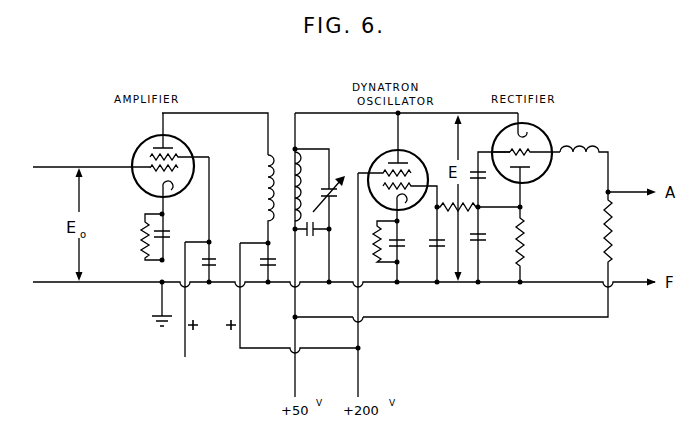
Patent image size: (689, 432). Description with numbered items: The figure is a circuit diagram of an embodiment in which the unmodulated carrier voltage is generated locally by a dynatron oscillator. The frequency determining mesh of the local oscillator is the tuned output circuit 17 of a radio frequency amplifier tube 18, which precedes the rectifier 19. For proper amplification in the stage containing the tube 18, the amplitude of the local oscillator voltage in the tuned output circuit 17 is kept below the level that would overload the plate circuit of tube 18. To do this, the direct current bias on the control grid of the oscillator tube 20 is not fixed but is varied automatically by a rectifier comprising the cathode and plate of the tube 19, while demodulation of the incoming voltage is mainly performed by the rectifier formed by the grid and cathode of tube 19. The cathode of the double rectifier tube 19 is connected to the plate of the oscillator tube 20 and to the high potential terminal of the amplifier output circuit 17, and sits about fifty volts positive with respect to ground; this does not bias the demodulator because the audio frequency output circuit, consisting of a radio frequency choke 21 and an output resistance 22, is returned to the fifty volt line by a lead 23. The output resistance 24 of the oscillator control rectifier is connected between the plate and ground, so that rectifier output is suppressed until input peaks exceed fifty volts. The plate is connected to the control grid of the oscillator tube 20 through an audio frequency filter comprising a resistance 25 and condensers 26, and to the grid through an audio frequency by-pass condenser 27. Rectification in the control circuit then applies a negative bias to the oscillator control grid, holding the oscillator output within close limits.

The tuned output circuit 17 is at (302, 215).
The radio frequency amplifier tube 18 is at (140, 144).
The rectifier 19 is at (496, 140).
The oscillator tube 20 is at (386, 158).
The radio frequency choke 21 is at (585, 151).
The output resistance 22 is at (613, 226).
The lead 23 is at (489, 320).
The output resistance of the oscillator control rectifier 24 is at (524, 228).
The resistance 25 is at (471, 208).
The condensers 26 is at (434, 248).
The audio frequency by-pass condenser 27 is at (480, 178).